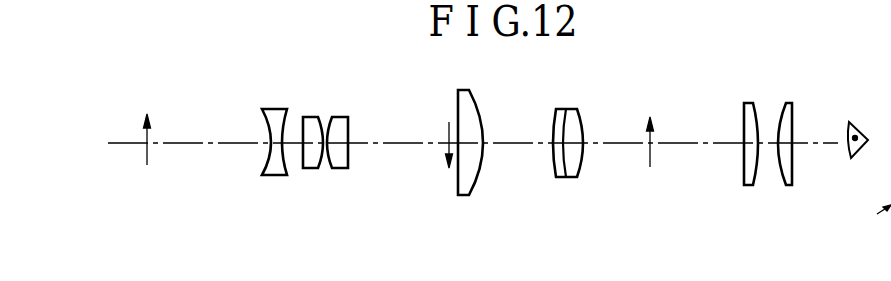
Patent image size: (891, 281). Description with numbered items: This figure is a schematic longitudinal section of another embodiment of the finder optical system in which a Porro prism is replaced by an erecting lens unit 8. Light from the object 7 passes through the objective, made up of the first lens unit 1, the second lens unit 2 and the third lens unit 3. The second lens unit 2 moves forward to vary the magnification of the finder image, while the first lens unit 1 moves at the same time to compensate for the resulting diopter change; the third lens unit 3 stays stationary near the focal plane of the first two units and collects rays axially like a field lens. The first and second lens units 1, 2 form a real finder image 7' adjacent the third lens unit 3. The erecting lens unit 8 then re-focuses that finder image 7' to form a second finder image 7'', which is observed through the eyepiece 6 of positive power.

The first lens unit 1 is at (278, 108).
The second lens unit 2 is at (304, 104).
The third lens unit 3 is at (478, 102).
The eyepiece 6 is at (746, 91).
The object 7 is at (157, 173).
The real finder image 7' is at (431, 177).
The second finder image 7'' is at (662, 175).
The erecting lens unit 8 is at (580, 168).